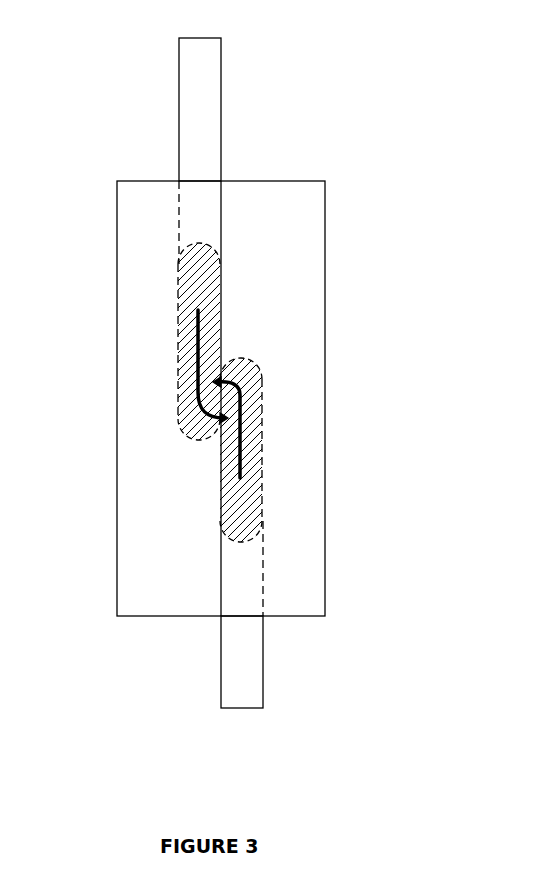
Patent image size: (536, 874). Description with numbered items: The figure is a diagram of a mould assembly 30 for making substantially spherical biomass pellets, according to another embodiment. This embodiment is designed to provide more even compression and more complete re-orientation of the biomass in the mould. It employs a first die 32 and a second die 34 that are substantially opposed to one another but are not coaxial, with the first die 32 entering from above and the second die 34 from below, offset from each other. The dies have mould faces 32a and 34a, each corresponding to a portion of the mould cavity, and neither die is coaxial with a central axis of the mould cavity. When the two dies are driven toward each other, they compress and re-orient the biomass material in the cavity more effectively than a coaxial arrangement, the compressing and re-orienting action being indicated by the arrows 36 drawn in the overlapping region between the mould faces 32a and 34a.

The mould assembly 30 is at (393, 153).
The first die 32 is at (202, 135).
The mould face 32a is at (205, 250).
The second die 34 is at (264, 676).
The mould face 34a is at (247, 542).
The arrows 36 is at (220, 388).